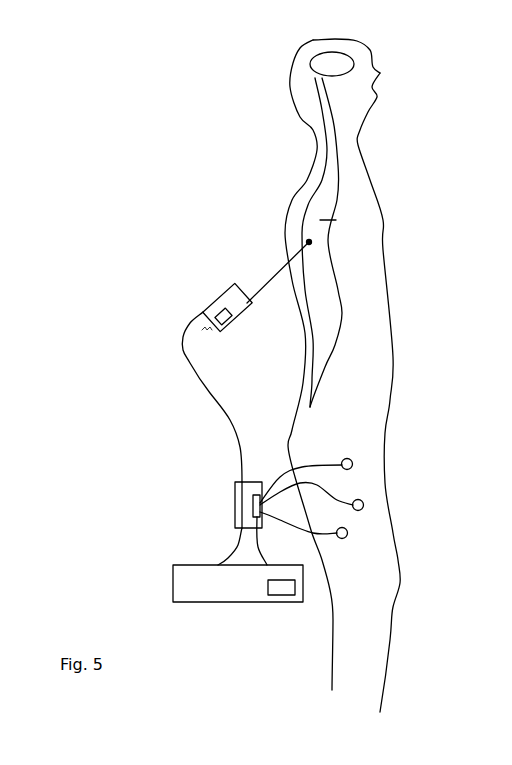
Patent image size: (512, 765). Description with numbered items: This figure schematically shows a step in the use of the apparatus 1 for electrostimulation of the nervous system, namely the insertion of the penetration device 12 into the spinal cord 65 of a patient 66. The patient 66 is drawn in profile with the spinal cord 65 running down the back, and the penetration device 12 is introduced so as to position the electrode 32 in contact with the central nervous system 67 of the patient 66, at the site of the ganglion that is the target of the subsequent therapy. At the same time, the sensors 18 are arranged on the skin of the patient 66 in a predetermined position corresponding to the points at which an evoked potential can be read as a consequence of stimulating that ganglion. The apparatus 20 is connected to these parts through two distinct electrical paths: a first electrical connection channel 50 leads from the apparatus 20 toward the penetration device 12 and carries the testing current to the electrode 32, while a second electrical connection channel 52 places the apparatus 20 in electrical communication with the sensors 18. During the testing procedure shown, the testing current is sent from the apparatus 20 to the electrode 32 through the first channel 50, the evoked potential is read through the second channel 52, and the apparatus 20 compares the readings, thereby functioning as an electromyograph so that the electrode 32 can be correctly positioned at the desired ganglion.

The apparatus for electrostimulation of the nervous system 1 is at (145, 455).
The penetration device 12 is at (262, 285).
The sensors 18 is at (352, 460).
The apparatus 20 is at (215, 593).
The electrode 32 is at (309, 242).
The first electrical connection channel 50 is at (213, 398).
The second electrical connection channel 52 is at (263, 547).
The spinal cord 65 is at (336, 220).
The patient 66 is at (373, 180).
The central nervous system 67 is at (325, 165).